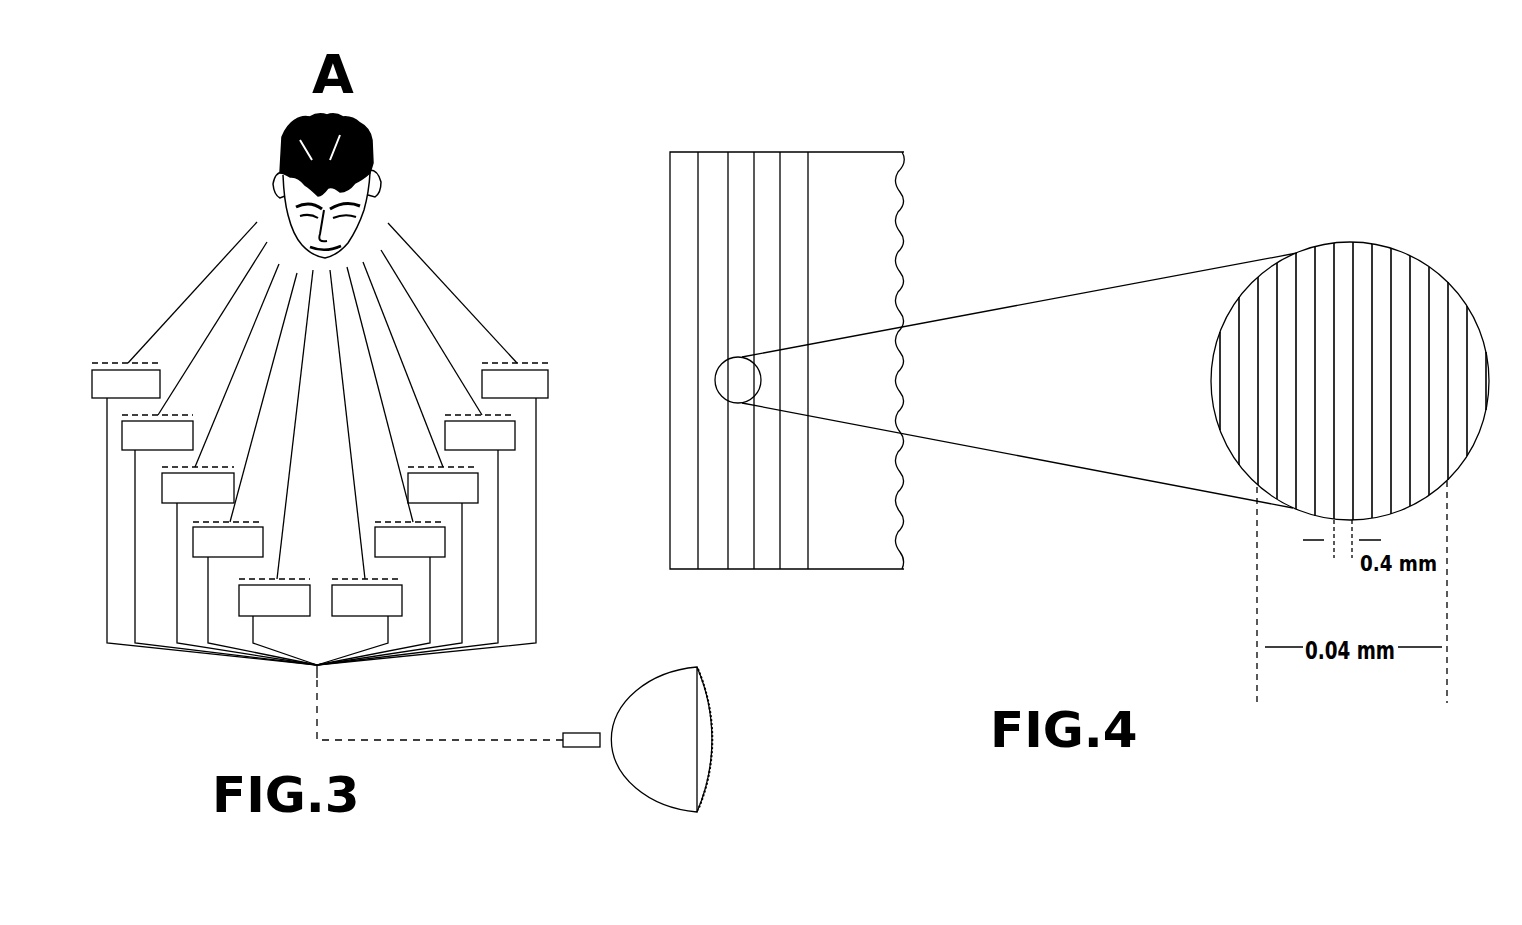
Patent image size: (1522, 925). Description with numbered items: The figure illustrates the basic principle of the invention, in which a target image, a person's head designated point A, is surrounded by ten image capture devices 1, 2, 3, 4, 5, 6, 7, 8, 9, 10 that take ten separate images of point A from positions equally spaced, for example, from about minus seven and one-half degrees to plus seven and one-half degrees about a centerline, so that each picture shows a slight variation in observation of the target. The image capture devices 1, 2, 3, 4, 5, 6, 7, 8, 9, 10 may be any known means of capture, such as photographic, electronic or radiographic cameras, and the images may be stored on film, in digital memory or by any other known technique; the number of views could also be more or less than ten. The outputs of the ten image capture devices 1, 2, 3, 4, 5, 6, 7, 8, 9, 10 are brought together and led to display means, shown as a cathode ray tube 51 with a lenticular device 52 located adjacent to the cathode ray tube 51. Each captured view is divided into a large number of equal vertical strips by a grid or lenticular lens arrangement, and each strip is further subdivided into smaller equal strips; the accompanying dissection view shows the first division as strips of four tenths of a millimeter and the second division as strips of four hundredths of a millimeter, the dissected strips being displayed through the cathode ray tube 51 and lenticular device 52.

In FIG. 3, the image capture device 1 is at (204, 443).
In FIG. 4, the image capture device 1 is at (688, 346).
In FIG. 3, the image capture device 2 is at (219, 453).
In FIG. 4, the image capture device 2 is at (717, 346).
In FIG. 3, the image capture device 3 is at (239, 464).
In FIG. 4, the image capture device 3 is at (744, 346).
In FIG. 3, the image capture device 4 is at (255, 469).
In FIG. 4, the image capture device 4 is at (769, 346).
In FIG. 3, the image capture device 5 is at (278, 467).
In FIG. 4, the image capture device 5 is at (797, 346).
In FIG. 3, the image capture device 6 is at (359, 467).
In FIG. 3, the image capture device 7 is at (381, 466).
In FIG. 3, the image capture device 8 is at (397, 463).
In FIG. 3, the image capture device 9 is at (416, 457).
In FIG. 3, the image capture device 10 is at (432, 444).
In FIG. 3, the cathode ray tube 51 is at (637, 697).
In FIG. 3, the lenticular device 52 is at (717, 699).